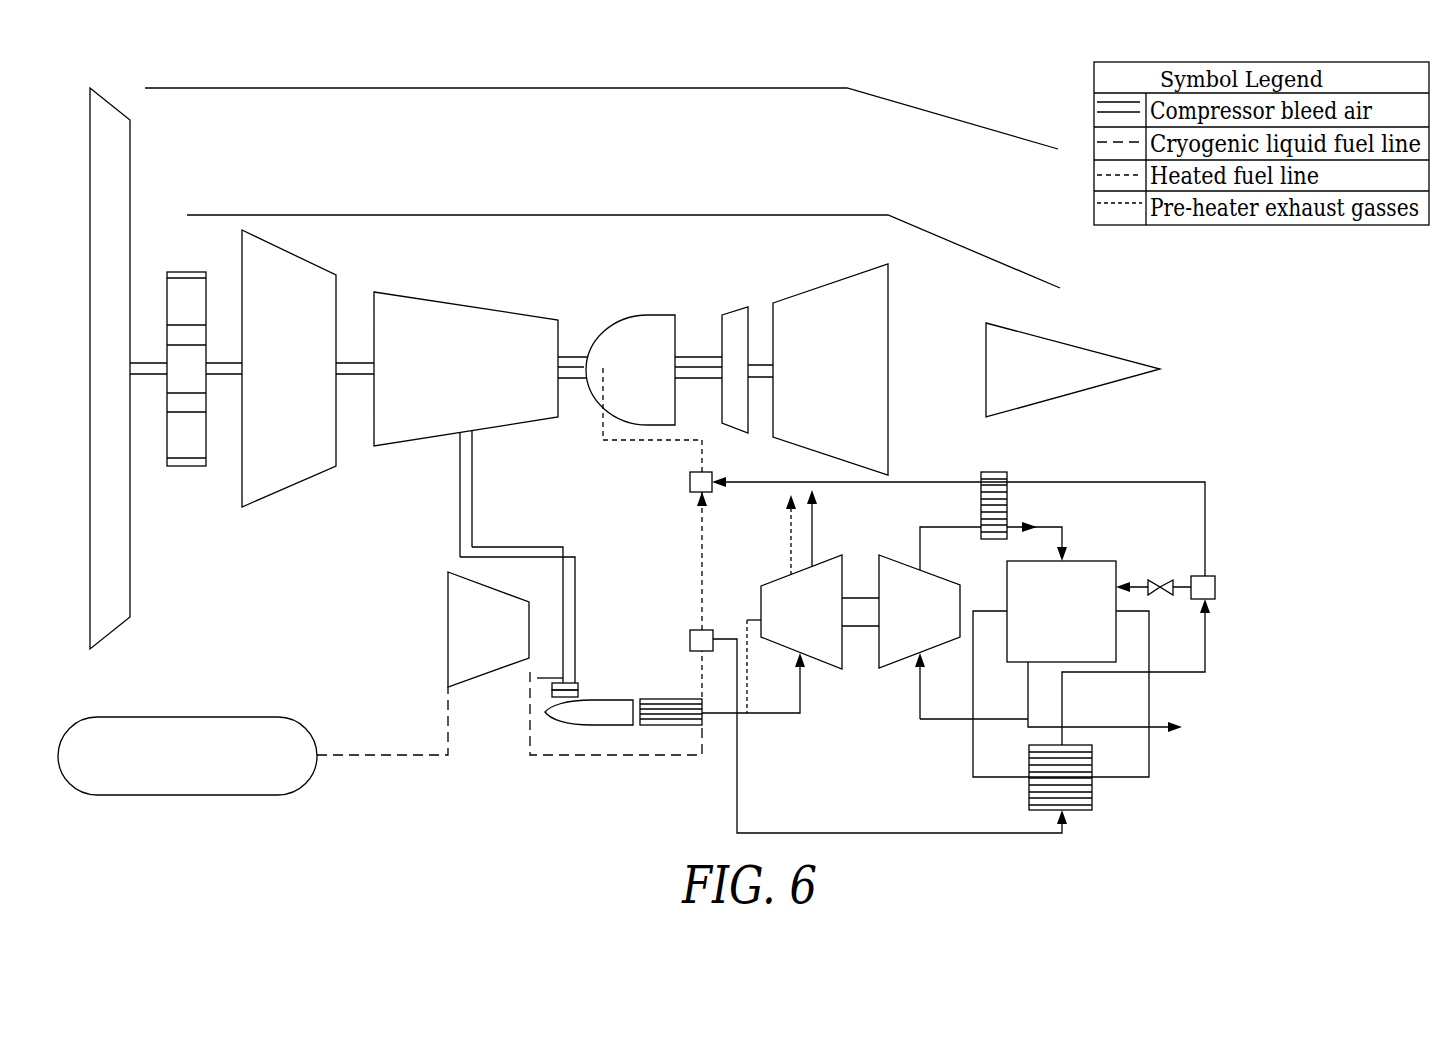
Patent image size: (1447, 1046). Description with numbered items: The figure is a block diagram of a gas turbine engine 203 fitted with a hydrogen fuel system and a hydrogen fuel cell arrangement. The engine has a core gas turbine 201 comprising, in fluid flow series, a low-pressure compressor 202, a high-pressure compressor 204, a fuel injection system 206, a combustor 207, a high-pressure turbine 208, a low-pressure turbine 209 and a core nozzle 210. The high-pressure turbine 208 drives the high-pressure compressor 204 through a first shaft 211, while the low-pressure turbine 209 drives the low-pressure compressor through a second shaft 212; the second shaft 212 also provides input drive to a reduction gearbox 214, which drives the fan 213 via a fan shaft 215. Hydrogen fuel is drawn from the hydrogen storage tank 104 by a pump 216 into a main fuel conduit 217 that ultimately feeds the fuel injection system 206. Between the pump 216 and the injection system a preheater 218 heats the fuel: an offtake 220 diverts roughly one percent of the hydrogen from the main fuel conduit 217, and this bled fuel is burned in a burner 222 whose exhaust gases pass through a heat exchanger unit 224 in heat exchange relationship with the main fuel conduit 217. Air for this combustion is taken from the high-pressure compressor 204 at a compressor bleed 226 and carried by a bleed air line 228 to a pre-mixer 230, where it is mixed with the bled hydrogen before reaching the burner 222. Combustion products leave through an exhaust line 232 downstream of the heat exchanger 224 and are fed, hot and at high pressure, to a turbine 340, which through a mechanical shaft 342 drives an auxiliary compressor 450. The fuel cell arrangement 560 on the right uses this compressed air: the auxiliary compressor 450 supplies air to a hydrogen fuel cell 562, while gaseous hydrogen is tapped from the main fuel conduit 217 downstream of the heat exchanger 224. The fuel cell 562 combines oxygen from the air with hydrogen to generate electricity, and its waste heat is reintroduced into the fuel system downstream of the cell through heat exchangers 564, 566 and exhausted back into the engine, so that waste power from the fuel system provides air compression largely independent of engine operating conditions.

The hydrogen storage tank 104 is at (195, 717).
The core gas turbine 201 is at (660, 250).
The low-pressure compressor 202 is at (300, 253).
The gas turbine engine 203 is at (466, 80).
The high-pressure compressor 204 is at (478, 303).
The fuel injection system 206 is at (598, 372).
The combustor 207 is at (676, 322).
The high-pressure turbine 208 is at (738, 305).
The low-pressure turbine 209 is at (810, 290).
The core nozzle 210 is at (1062, 306).
The first shaft 211 is at (568, 352).
The second shaft 212 is at (352, 360).
The fan 213 is at (130, 145).
The reduction gearbox 214 is at (190, 466).
The fan shaft 215 is at (148, 376).
The pump 216 is at (448, 585).
The main fuel conduit 217 is at (702, 532).
The preheater 218 is at (545, 787).
The offtake 220 is at (545, 678).
The burner 222 is at (582, 725).
The heat exchanger unit 224 is at (668, 726).
The compressor bleed 226 is at (460, 448).
The bleed air line 228 is at (460, 520).
The pre-mixer 230 is at (552, 692).
The exhaust line 232 is at (757, 616).
The turbine 340 is at (822, 668).
The mechanical shaft 342 is at (855, 598).
The auxiliary compressor 450 is at (893, 668).
The pre-heater system 560 is at (1200, 754).
The hydrogen fuel cell 562 is at (1100, 561).
The heat exchanger 564 is at (1092, 800).
The heat exchanger 566 is at (1008, 505).